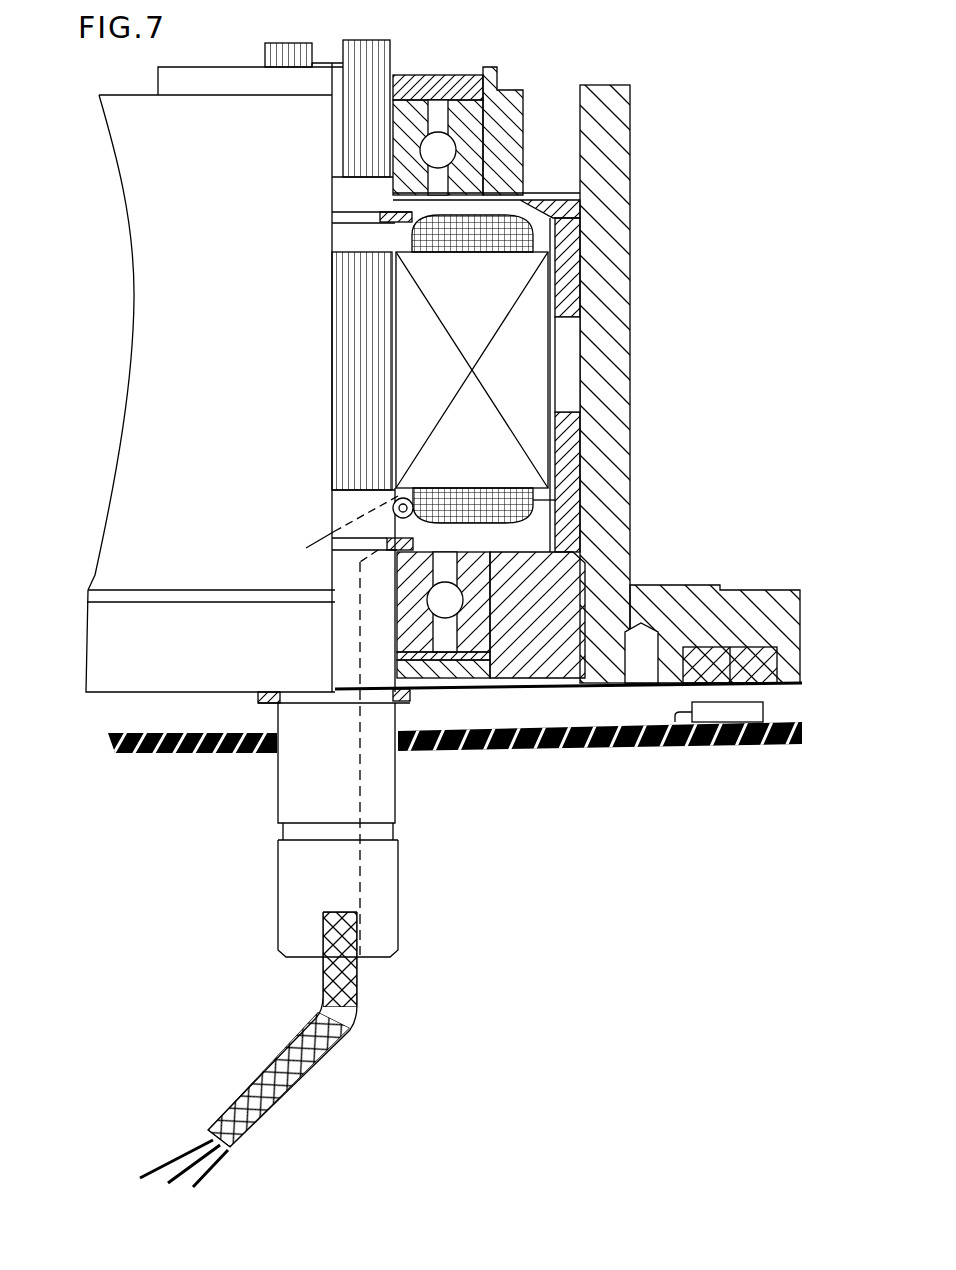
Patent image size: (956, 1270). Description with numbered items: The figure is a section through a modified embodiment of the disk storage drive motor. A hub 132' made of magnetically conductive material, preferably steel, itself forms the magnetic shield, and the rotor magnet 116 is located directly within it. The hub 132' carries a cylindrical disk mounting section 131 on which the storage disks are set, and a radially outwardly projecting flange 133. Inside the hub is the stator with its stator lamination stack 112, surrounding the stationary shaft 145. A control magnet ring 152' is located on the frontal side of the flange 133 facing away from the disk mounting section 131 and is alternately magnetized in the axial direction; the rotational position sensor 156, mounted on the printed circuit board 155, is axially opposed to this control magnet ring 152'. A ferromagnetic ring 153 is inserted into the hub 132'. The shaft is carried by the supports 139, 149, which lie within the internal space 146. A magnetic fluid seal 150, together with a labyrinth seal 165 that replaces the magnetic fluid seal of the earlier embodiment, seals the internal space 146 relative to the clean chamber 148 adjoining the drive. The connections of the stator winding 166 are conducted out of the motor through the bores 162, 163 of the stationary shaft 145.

The labyrinth seal 165 is at (418, 86).
The support 139 is at (470, 115).
The clean chamber 148 is at (712, 241).
The disk mounting section 131 is at (630, 295).
The rotor magnet 116 is at (580, 353).
The stator lamination stack 112 is at (545, 440).
The internal space 146 is at (556, 541).
The bore 162 is at (340, 528).
The hub 132' is at (623, 385).
The control magnet ring 152' is at (723, 620).
The flange 133 is at (772, 600).
The ball bearing 149 is at (397, 622).
The magnetic fluid seal 150 is at (436, 682).
The ferromagnetic ring 153 is at (550, 655).
The bore 163 is at (330, 787).
The stationary shaft 145 is at (380, 786).
The printed circuit board 155 is at (620, 736).
The rotational position sensor 156 is at (735, 714).
The stator winding connections 166 is at (180, 1162).